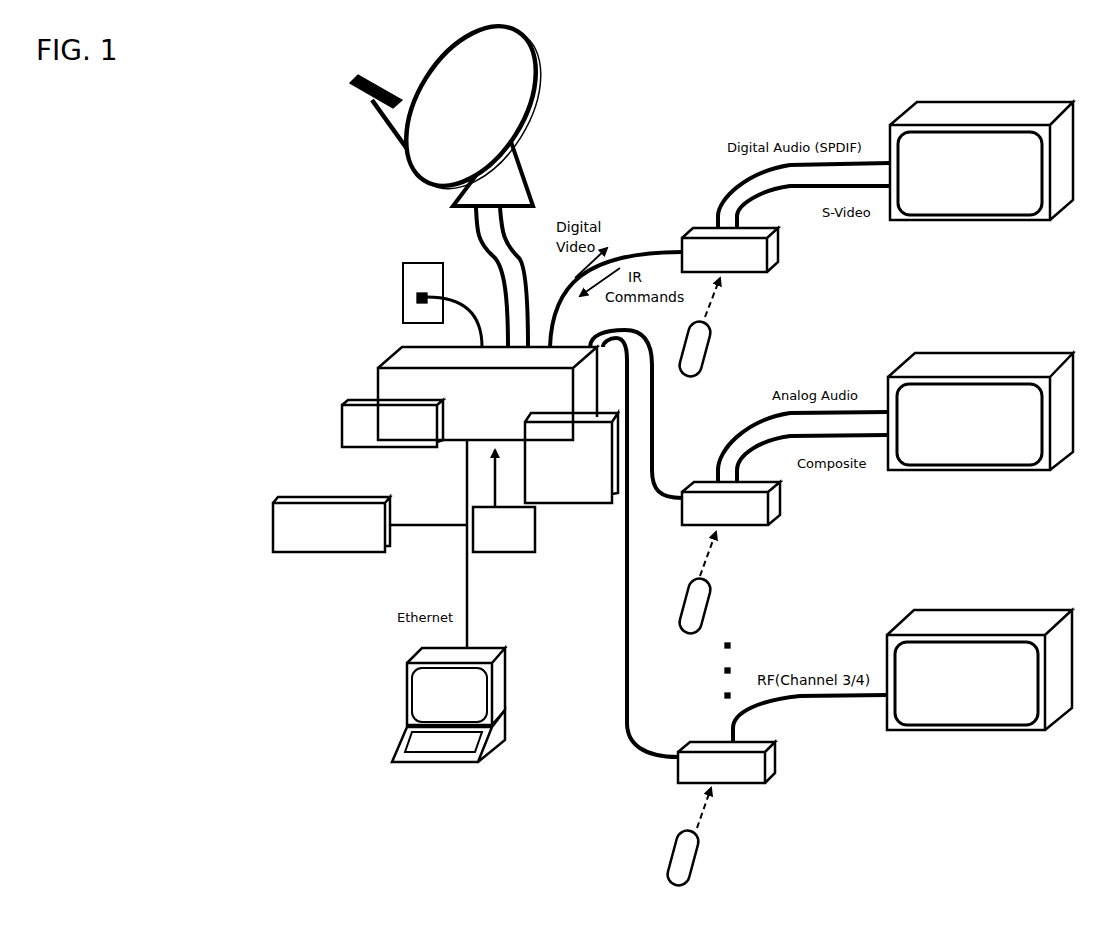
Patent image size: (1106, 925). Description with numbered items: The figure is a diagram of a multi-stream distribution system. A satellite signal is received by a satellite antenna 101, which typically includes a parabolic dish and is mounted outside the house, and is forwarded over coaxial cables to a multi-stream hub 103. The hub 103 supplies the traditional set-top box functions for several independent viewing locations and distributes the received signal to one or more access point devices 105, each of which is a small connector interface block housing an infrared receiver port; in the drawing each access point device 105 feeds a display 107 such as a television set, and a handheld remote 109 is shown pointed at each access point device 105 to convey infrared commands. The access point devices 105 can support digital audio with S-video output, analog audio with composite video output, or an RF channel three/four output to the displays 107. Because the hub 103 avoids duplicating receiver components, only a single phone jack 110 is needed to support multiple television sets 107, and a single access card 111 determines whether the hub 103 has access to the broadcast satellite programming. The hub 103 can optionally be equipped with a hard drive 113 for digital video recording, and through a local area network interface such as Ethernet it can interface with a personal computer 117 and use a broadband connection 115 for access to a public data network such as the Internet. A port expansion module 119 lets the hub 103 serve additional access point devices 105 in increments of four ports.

The satellite antenna 101 is at (455, 200).
The multi-stream hub 103 is at (377, 375).
The access point device 105 is at (782, 252).
The display 107 is at (980, 220).
The remote control 109 is at (700, 363).
The phone jack 110 is at (403, 298).
The access card 111 is at (488, 553).
The hard drive 113 is at (340, 417).
The broadband connection 115 is at (317, 552).
The personal computer 117 is at (407, 712).
The port expansion module 119 is at (552, 503).